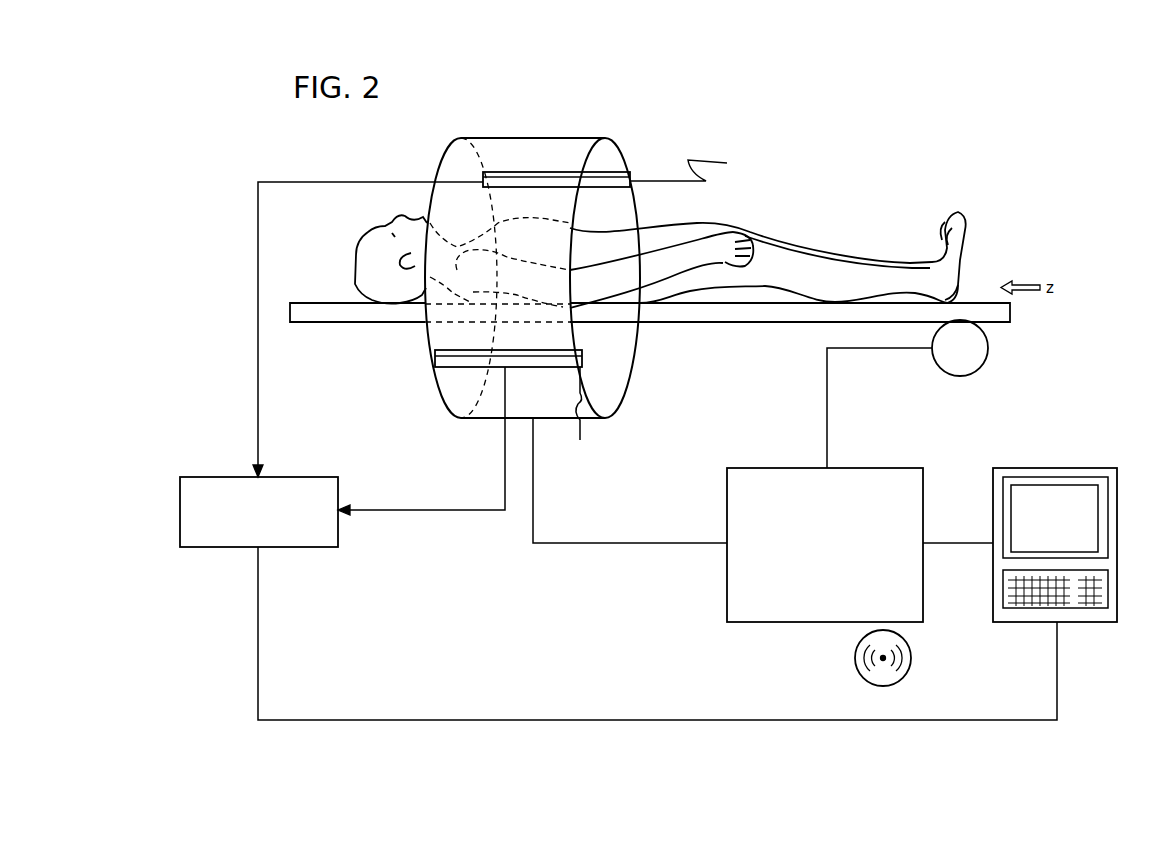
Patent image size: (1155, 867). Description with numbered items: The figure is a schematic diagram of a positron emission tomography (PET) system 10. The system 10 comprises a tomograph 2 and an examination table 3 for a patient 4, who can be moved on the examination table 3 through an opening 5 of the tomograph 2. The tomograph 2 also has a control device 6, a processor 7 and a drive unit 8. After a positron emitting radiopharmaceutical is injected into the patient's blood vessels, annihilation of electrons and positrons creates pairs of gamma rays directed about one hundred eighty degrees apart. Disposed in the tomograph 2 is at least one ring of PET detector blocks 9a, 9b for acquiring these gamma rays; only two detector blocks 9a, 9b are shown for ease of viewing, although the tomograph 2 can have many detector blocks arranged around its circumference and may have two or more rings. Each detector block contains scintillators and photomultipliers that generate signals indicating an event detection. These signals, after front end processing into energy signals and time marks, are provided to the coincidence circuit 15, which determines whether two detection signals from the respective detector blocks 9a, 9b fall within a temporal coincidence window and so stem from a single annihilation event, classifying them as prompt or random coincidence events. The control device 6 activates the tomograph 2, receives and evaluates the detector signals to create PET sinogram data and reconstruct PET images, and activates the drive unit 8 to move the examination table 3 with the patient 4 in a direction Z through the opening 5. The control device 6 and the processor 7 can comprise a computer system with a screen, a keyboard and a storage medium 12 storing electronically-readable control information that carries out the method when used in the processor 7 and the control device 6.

The positron emission tomography (PET) system 10 is at (723, 119).
The tomograph 2 is at (533, 136).
The opening 5 is at (617, 162).
The PET detector block 9a is at (516, 408).
The PET detector block 9b is at (694, 167).
The examination table 3 is at (1012, 313).
The patient 4 is at (967, 224).
The drive unit 8 is at (987, 366).
The coincidence circuit 15 is at (292, 475).
The control device 6 is at (727, 583).
The processor 7 is at (1057, 466).
The storage medium 12 is at (912, 656).